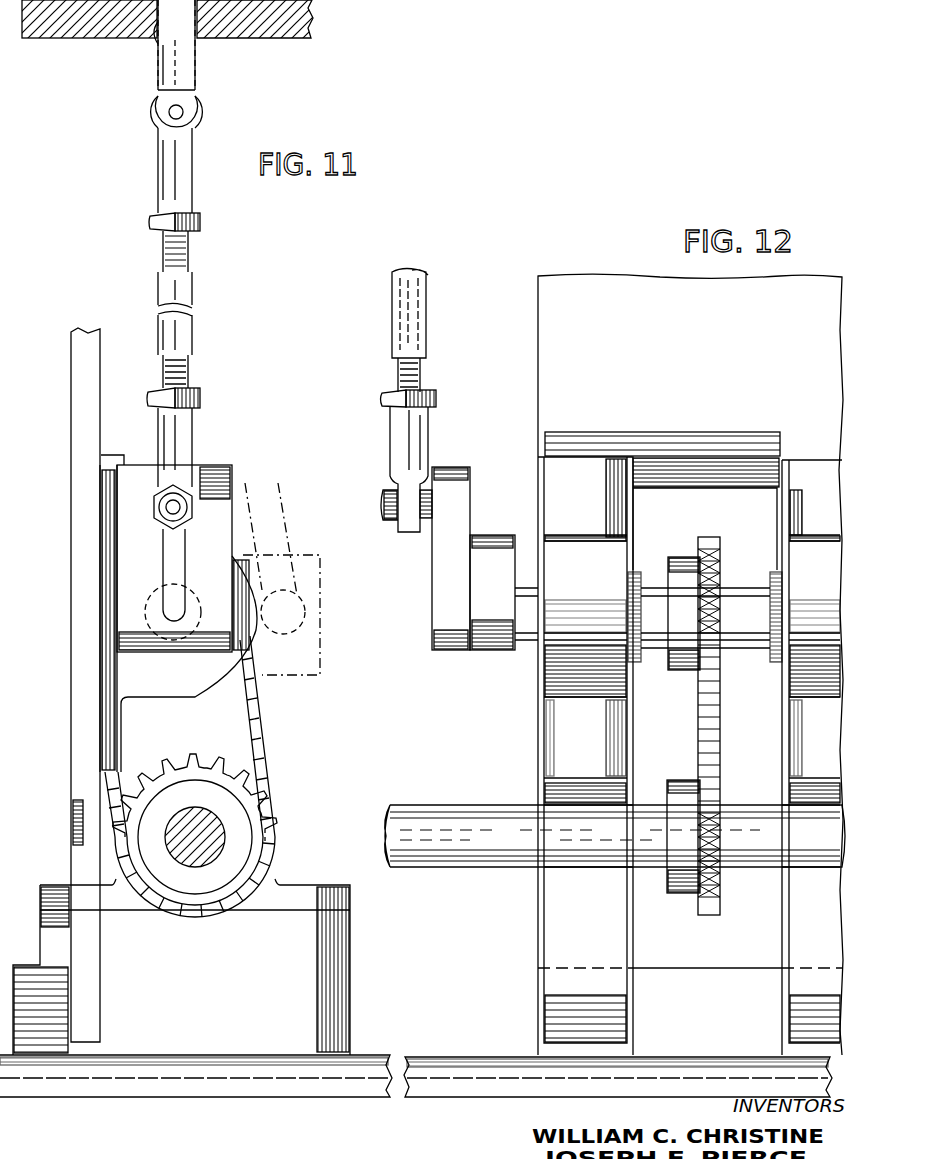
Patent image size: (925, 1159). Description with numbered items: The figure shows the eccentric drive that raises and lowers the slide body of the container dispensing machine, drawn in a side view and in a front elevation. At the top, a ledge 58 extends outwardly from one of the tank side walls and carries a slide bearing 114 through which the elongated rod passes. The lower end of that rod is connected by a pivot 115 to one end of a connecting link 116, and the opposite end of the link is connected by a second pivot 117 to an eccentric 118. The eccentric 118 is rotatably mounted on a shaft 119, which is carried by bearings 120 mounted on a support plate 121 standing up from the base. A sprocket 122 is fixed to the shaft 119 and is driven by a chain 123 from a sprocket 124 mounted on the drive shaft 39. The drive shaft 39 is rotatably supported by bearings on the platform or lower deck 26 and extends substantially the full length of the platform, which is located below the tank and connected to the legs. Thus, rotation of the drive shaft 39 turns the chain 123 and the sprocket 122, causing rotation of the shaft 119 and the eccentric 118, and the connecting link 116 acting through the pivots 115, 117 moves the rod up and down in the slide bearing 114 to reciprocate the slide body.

In FIG. 11, the platform 26 is at (216, 1080).
In FIG. 12, the platform 26 is at (460, 1084).
In FIG. 11, the drive shaft 39 is at (205, 837).
In FIG. 12, the drive shaft 39 is at (462, 816).
In FIG. 11, the ledge 58 is at (50, 30).
In FIG. 11, the slide bearing 114 is at (156, 45).
In FIG. 11, the pivot 115 is at (168, 113).
In FIG. 11, the connecting link 116 is at (183, 292).
In FIG. 12, the connecting link 116 is at (413, 297).
In FIG. 11, the pivot 117 is at (181, 504).
In FIG. 12, the pivot 117 is at (388, 505).
In FIG. 11, the eccentric 118 is at (210, 467).
In FIG. 12, the eccentric 118 is at (460, 490).
In FIG. 12, the shaft 119 is at (528, 632).
In FIG. 11, the bearings 120 is at (207, 674).
In FIG. 12, the bearings 120 is at (596, 472).
In FIG. 11, the support plate 121 is at (70, 695).
In FIG. 12, the support plate 121 is at (605, 296).
In FIG. 12, the sprocket 122 is at (718, 572).
In FIG. 11, the chain 123 is at (262, 712).
In FIG. 12, the chain 123 is at (692, 697).
In FIG. 11, the sprocket 124 is at (180, 778).
In FIG. 12, the sprocket 124 is at (720, 858).